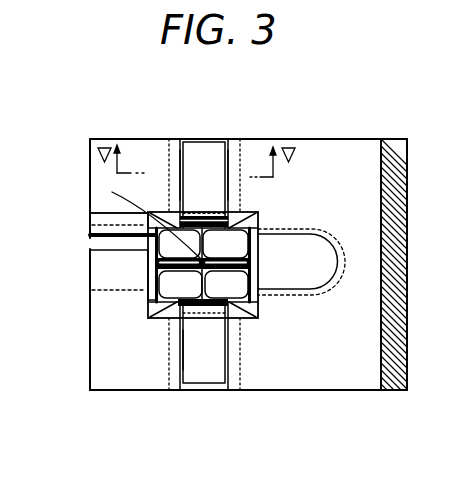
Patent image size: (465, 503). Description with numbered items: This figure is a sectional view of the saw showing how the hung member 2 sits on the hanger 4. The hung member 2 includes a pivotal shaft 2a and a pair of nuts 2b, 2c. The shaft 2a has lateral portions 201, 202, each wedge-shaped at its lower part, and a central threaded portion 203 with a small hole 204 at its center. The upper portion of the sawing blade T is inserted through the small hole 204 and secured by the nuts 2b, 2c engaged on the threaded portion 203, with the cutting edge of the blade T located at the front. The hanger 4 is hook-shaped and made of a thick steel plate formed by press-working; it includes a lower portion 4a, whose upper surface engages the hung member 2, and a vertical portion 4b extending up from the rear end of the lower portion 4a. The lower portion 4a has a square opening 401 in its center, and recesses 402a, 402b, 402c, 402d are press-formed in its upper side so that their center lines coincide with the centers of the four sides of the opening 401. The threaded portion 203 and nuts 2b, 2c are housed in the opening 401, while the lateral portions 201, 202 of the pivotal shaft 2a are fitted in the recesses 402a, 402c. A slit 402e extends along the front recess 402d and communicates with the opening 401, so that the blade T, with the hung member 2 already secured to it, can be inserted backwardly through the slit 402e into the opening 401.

The hung member 2 is at (153, 313).
The pivotal shaft 2a is at (232, 157).
The nut 2b is at (93, 214).
The nut 2c is at (157, 288).
The hanger 4 is at (337, 384).
The lower portion 4a is at (100, 349).
The vertical portion 4b is at (398, 303).
The lateral portion 201 is at (180, 168).
The lateral portion 202 is at (226, 355).
The central threaded portion 203 is at (253, 212).
The small hole 204 is at (240, 250).
The square opening 401 is at (245, 306).
The recess 402a is at (200, 389).
The recess 402b is at (322, 231).
The recess 402c is at (203, 137).
The front recess 402d is at (96, 272).
The slit 402e is at (93, 243).
The sawing blade T is at (148, 219).